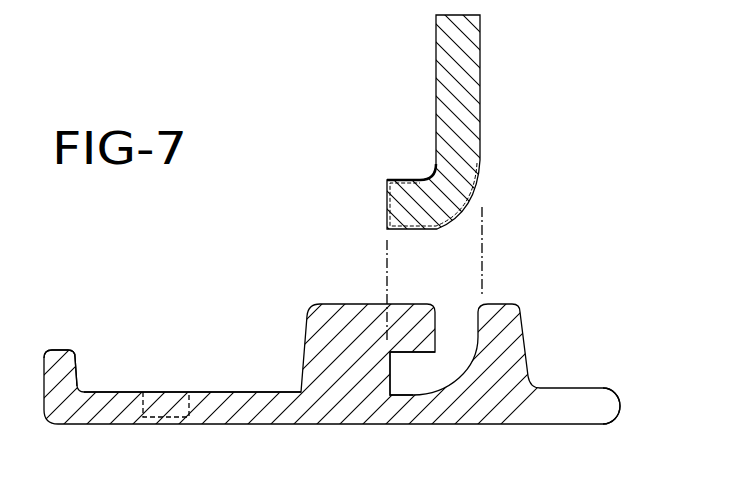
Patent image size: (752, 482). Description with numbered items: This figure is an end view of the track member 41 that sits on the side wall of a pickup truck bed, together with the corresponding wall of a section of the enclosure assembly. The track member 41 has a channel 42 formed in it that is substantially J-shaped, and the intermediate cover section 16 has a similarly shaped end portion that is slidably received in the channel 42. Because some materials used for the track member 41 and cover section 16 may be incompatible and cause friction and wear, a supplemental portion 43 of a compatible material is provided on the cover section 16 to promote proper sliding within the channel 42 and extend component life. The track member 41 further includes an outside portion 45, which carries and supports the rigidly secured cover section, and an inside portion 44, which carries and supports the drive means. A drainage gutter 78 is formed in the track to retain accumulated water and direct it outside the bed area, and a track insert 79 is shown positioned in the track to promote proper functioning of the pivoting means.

The intermediate cover section 16 is at (475, 92).
The track member 41 is at (540, 367).
The channel 42 is at (423, 367).
The supplemental portion 43 is at (470, 198).
The inside portion 44 is at (62, 352).
The outside portion 45 is at (600, 387).
The drainage gutter 78 is at (125, 392).
The track insert 79 is at (163, 405).